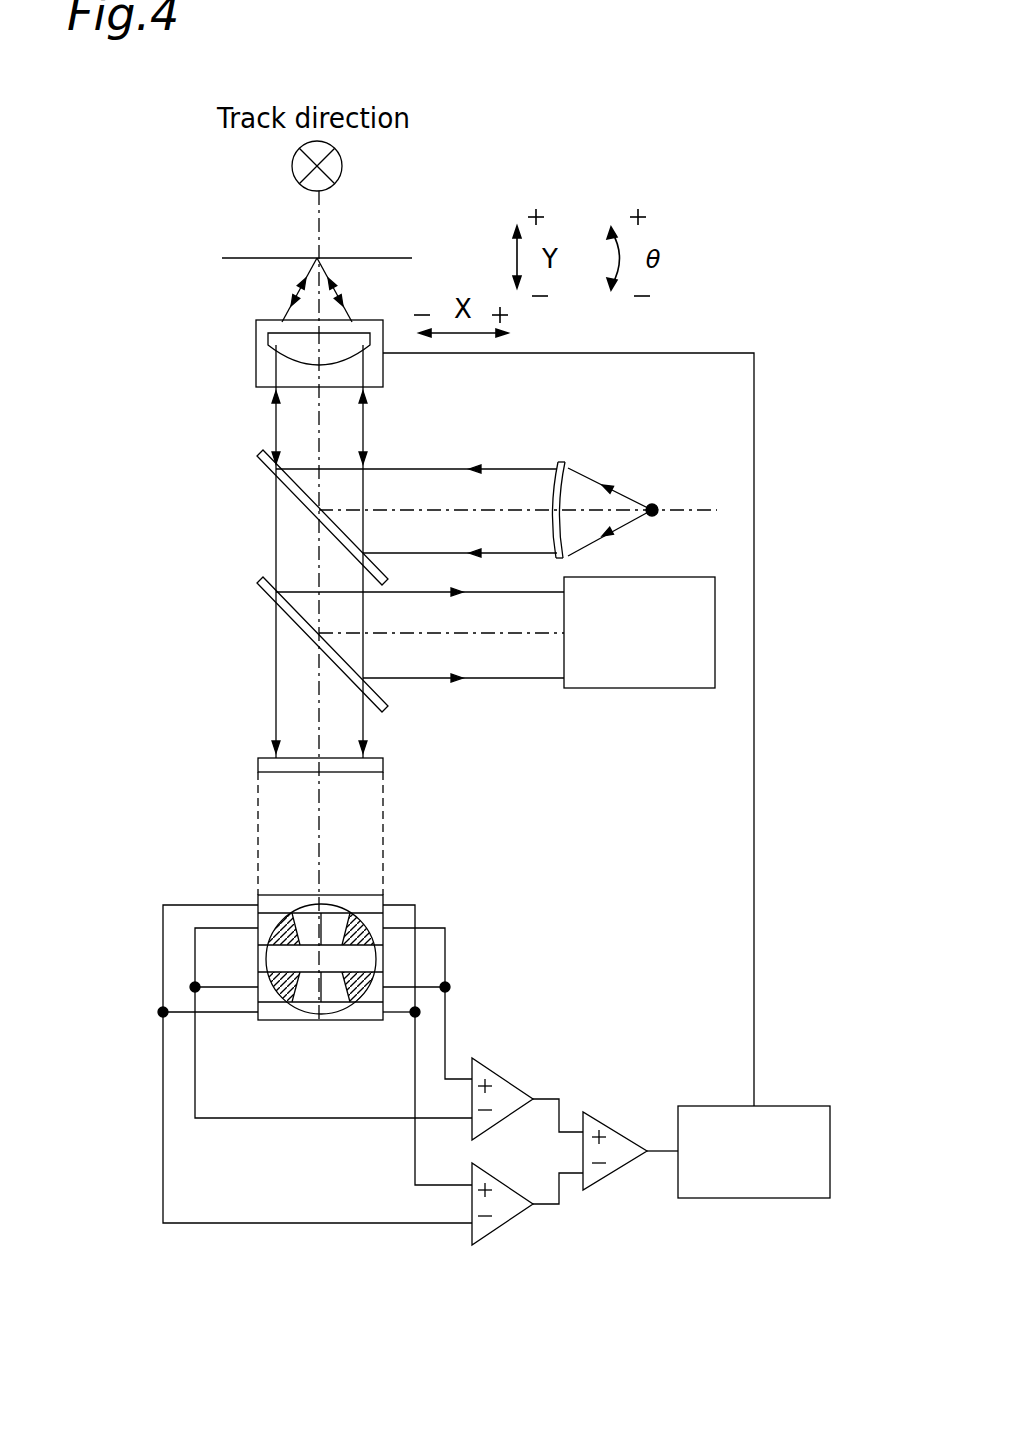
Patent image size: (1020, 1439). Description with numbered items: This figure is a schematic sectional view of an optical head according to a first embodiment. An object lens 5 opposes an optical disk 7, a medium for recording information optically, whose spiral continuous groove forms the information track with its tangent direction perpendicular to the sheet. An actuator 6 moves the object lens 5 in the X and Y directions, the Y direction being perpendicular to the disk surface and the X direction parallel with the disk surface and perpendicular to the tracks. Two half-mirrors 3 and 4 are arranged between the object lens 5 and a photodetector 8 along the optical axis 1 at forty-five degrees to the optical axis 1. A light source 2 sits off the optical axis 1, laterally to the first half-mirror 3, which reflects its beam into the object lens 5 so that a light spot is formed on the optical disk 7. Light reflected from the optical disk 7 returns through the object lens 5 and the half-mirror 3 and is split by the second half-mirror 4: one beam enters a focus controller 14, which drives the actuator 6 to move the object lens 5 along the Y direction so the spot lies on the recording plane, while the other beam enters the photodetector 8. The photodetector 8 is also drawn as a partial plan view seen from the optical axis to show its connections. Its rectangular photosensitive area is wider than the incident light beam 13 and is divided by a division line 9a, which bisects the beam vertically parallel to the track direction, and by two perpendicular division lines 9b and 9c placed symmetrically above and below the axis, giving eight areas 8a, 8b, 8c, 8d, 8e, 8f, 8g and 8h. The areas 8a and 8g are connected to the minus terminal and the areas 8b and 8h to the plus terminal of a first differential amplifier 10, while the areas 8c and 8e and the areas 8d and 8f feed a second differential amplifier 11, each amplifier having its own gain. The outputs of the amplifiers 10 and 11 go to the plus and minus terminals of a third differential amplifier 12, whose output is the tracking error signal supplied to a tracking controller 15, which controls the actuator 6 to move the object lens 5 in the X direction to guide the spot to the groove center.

The optical axis 1 is at (317, 218).
The light source 2 is at (652, 504).
The half-mirror 3 is at (258, 458).
The half-mirror 4 is at (258, 580).
The object lens 5 is at (267, 338).
The actuator 6 is at (256, 372).
The optical disk 7 is at (237, 262).
The photodetector 8 is at (250, 768).
The first area 8a is at (280, 910).
The second area 8b is at (365, 910).
The third area 8c is at (310, 922).
The fourth area 8d is at (330, 920).
The divided area 8e is at (308, 990).
The divided area 8f is at (333, 990).
The fifth area 8g is at (270, 1015).
The sixth area 8h is at (367, 1015).
The division line 9a is at (321, 900).
The division line 9b is at (258, 913).
The division line 9c is at (260, 998).
The differential amplifier 10 is at (485, 1246).
The differential amplifier 11 is at (487, 1058).
The third differential amplifier 12 is at (617, 1176).
The light beam 13 is at (318, 1022).
The focus controller 14 is at (633, 688).
The tracking controller 15 is at (748, 1198).